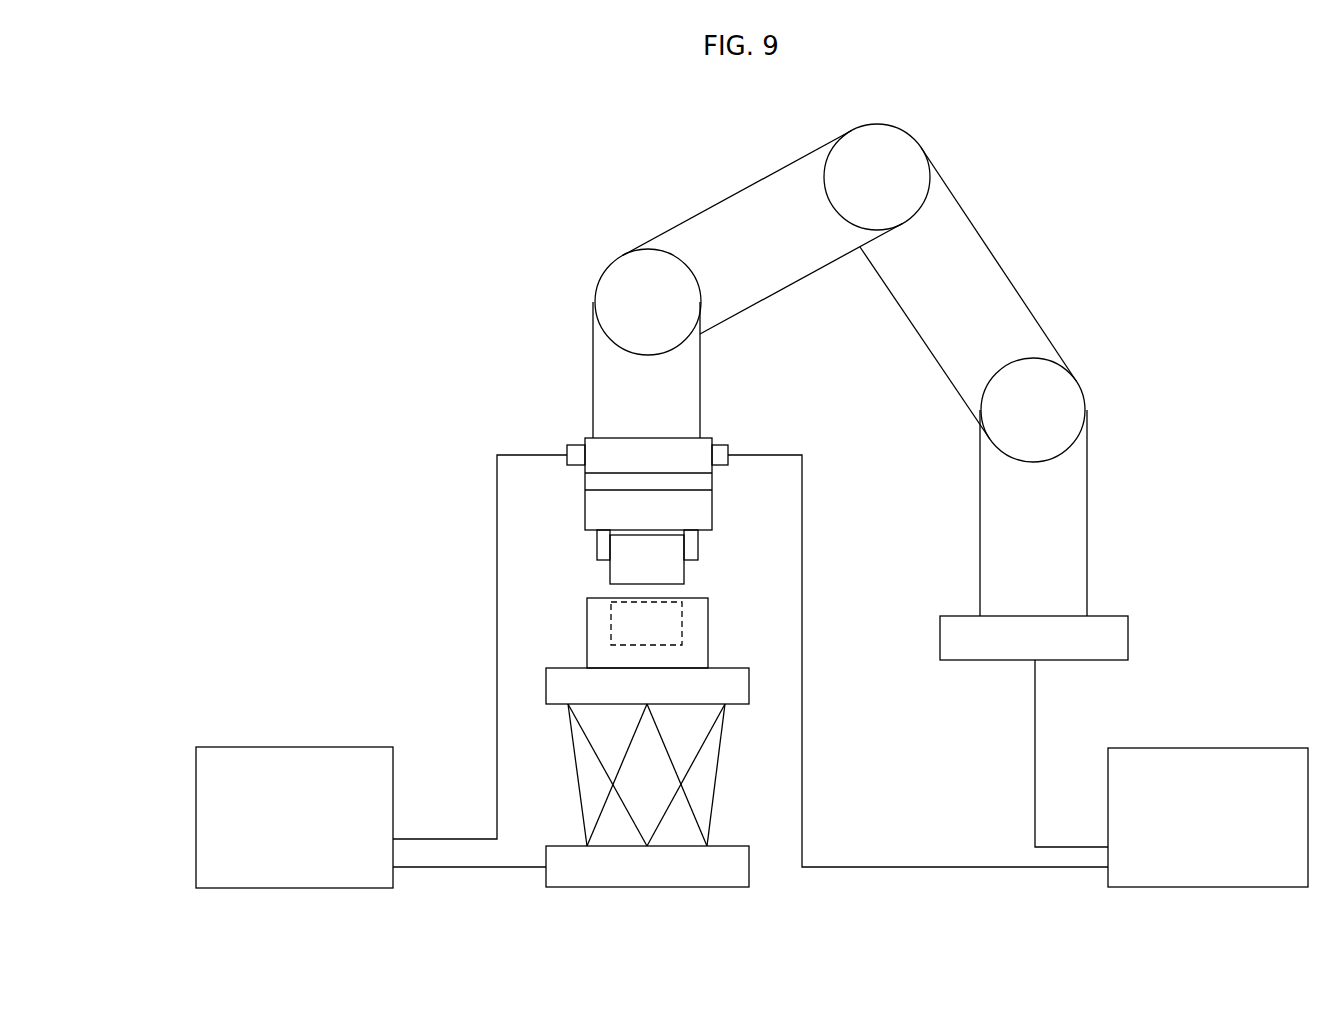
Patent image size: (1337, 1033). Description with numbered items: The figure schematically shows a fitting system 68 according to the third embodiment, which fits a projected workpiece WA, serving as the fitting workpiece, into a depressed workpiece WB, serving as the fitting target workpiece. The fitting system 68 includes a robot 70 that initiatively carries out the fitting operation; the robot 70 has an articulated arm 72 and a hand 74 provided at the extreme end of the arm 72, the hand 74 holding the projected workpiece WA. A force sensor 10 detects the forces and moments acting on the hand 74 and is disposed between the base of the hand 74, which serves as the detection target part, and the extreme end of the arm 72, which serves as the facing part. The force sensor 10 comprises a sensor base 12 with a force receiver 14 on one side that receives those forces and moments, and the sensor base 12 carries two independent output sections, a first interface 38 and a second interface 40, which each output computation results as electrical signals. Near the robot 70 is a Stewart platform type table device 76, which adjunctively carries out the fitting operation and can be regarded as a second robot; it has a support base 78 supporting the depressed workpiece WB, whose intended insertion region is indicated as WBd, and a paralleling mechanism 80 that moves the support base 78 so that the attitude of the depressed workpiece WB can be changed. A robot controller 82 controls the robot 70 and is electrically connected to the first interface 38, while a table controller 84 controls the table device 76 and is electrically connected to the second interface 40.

The fitting system 68 is at (353, 157).
The robot 70 is at (1010, 217).
The arm 72 is at (1058, 355).
The sensor base 12 is at (627, 437).
The force sensor 10 is at (684, 434).
The force receiver 14 is at (712, 482).
The second interface 40 is at (575, 445).
The first interface 38 is at (729, 452).
The hand 74 is at (698, 545).
The projected workpiece WA is at (622, 575).
The depressed workpiece WB is at (587, 637).
The workpiece B insertion target WBd is at (682, 622).
The support base 78 is at (732, 668).
The Stewart platform type table device 76 is at (565, 777).
The paralleling mechanism 80 is at (715, 796).
The table controller 84 is at (320, 747).
The robot controller 82 is at (1235, 748).